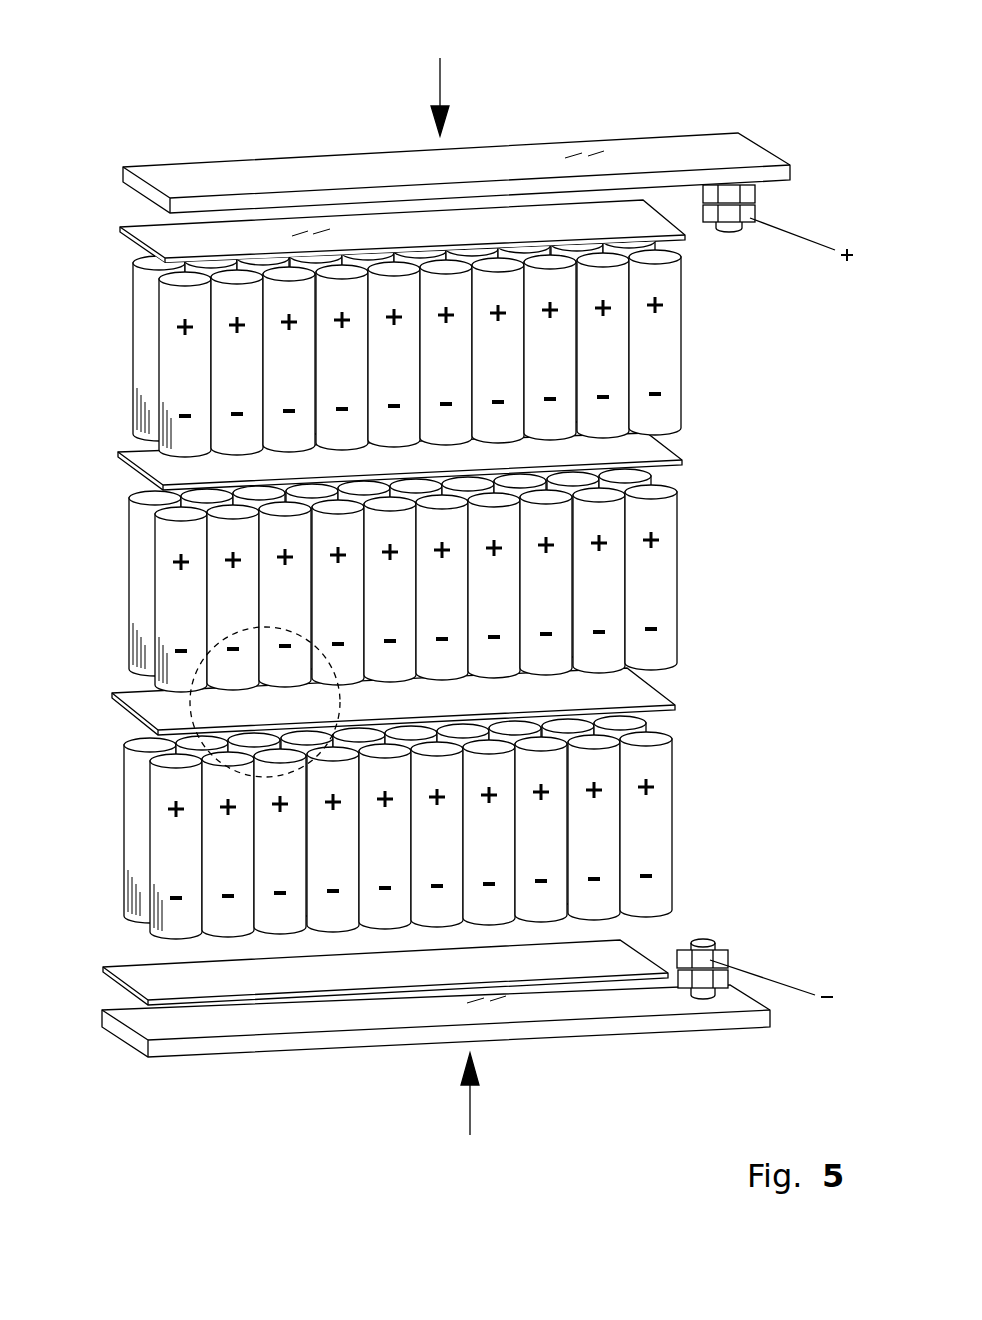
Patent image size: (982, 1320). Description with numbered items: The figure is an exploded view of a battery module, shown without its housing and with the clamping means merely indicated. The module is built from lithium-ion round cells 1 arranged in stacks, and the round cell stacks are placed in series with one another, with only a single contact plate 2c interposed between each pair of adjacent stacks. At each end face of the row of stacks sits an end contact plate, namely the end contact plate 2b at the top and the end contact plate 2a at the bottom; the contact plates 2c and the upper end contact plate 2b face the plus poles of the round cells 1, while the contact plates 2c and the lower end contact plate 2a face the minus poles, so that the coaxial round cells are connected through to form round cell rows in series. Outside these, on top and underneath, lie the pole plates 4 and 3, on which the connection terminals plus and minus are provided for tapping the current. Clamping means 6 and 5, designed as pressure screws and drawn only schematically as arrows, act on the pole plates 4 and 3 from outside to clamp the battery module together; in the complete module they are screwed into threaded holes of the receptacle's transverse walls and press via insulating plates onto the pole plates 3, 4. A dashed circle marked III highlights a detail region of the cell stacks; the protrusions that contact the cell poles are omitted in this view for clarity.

The round cell 1 is at (153, 367).
The end contact plate 2a is at (615, 958).
The end contact plate 2b is at (677, 238).
The contact plate 2c is at (682, 463).
The pole plate 3 is at (260, 1043).
The pole plate 4 is at (290, 168).
The clamping means 5 is at (475, 1107).
The clamping means 6 is at (440, 80).
The detail region III is at (232, 632).